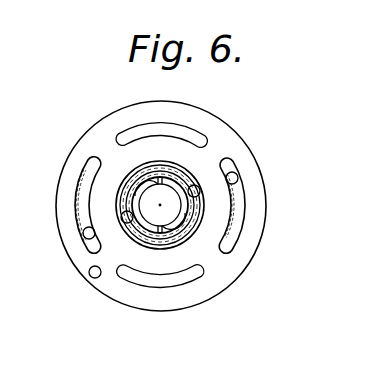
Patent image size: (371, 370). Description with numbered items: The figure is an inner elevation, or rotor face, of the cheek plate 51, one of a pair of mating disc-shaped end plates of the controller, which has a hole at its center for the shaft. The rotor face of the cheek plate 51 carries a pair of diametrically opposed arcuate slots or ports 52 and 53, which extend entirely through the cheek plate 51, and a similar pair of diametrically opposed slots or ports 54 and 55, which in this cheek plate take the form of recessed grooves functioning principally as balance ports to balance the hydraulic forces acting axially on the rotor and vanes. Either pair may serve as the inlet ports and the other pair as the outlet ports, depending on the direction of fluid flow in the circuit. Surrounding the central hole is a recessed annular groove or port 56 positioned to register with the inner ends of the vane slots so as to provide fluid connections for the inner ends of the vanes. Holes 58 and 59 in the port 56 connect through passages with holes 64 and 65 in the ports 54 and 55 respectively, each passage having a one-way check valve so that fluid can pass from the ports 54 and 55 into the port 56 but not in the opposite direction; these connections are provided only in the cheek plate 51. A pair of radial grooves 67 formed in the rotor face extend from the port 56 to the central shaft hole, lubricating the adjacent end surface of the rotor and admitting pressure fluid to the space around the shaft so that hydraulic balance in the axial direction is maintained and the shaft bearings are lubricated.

The cheek plate 51 is at (245, 147).
The arcuate slot or port 52 is at (181, 127).
The arcuate slot or port 53 is at (165, 285).
The slot or port 54 is at (79, 226).
The slot or port 55 is at (244, 208).
The annular groove or port 56 is at (183, 244).
The hole 58 is at (126, 224).
The hole 59 is at (195, 187).
The hole 64 is at (86, 240).
The hole 65 is at (238, 178).
The radial groove 67 is at (132, 180).